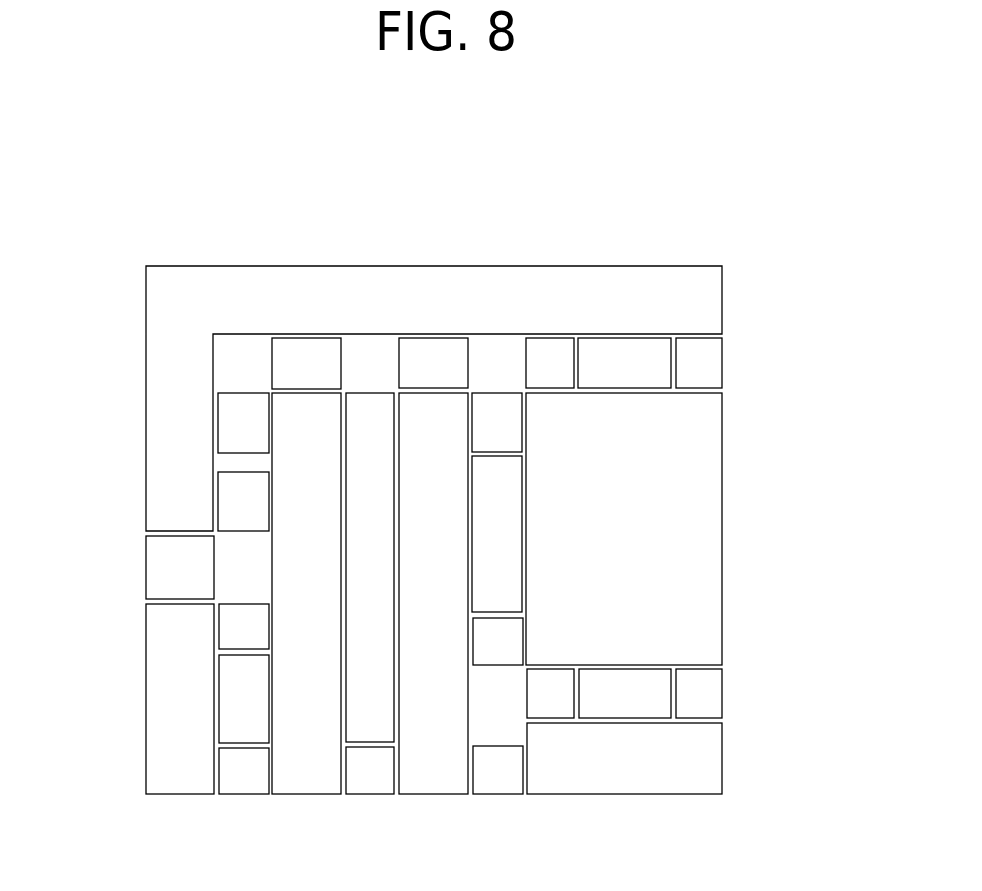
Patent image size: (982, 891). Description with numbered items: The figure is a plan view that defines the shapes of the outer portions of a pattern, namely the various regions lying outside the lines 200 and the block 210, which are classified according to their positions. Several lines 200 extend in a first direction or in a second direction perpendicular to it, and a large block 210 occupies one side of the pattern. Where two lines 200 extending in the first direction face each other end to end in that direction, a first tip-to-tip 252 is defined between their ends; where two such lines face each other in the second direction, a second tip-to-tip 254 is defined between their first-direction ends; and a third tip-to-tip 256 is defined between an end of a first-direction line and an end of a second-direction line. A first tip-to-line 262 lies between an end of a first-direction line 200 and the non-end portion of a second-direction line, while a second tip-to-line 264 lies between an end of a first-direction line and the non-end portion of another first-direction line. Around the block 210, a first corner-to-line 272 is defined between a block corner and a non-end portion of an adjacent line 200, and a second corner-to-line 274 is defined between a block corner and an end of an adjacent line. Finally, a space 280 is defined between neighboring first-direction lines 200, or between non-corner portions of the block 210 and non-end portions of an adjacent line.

The line 200 is at (174, 266).
The block 210 is at (722, 517).
The first tip-to-tip 252 is at (167, 567).
The second tip-to-tip 254 is at (242, 773).
The third tip-to-tip 256 is at (497, 772).
The first tip-to-line 262 is at (311, 355).
The second tip-to-line 264 is at (232, 431).
The first corner-to-line 272 is at (553, 354).
The second corner-to-line 274 is at (499, 413).
The space 280 is at (373, 410).